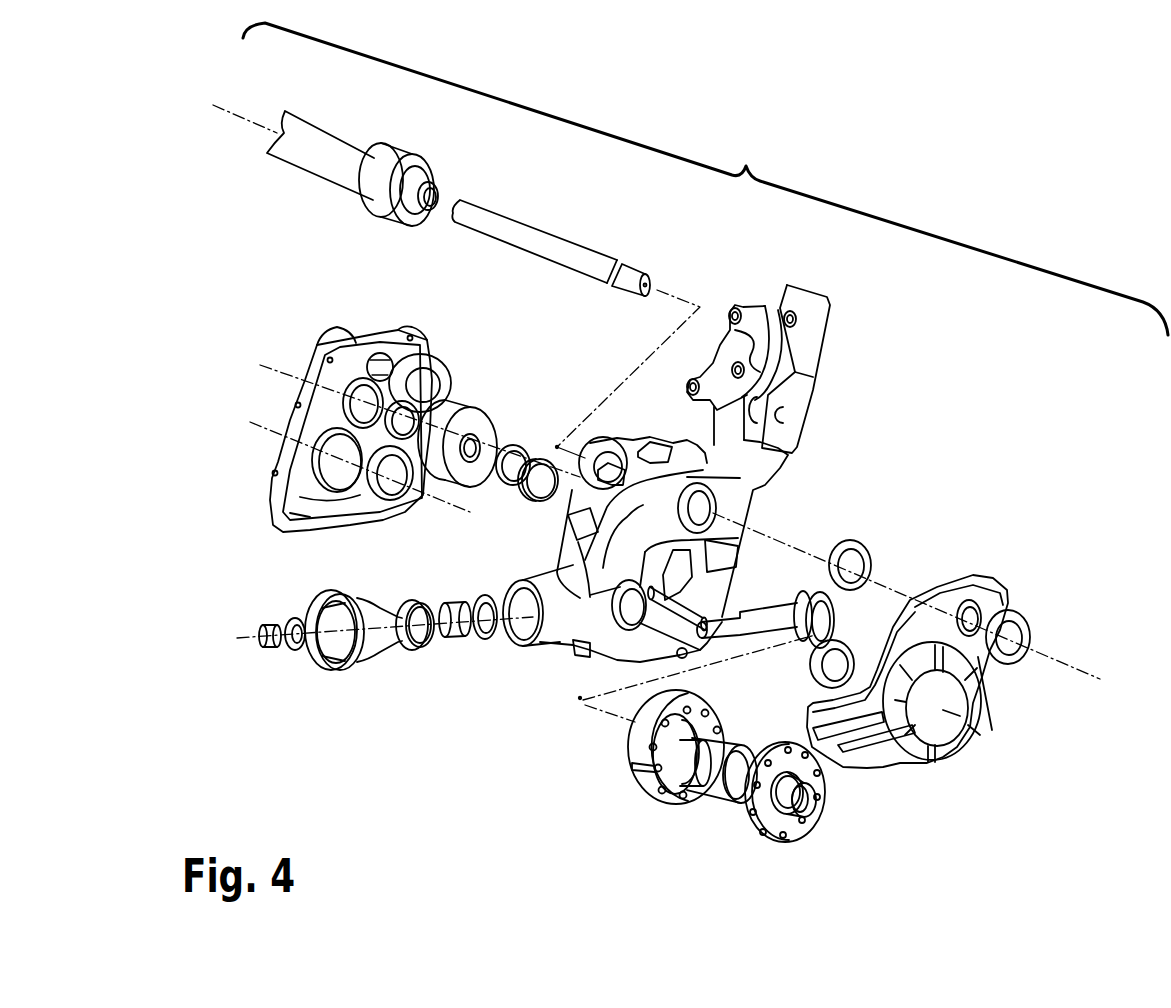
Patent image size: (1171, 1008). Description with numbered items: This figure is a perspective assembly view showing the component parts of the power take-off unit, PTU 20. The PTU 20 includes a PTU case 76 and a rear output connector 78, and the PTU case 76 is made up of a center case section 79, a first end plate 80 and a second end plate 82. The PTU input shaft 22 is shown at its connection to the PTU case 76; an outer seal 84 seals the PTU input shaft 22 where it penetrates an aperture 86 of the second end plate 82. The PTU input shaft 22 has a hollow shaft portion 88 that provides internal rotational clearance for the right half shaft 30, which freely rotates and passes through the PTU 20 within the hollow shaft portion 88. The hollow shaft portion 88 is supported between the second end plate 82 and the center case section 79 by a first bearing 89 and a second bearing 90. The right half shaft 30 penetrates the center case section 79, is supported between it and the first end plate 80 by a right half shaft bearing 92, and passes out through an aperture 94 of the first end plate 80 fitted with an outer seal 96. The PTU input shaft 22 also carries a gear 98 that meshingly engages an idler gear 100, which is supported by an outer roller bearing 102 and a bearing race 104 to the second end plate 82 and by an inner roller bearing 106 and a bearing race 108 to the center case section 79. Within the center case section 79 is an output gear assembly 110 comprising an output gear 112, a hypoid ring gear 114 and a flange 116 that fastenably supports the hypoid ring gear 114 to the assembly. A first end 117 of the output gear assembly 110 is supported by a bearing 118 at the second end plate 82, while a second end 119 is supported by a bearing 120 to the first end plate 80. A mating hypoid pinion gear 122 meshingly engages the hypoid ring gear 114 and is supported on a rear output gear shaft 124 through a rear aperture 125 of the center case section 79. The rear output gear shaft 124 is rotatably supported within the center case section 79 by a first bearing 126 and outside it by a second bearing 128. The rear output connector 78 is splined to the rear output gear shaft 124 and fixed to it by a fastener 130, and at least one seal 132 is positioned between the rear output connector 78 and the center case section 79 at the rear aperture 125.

The PTU 20 is at (705, 179).
The PTU input shaft 22 is at (322, 177).
The right half shaft 30 is at (525, 237).
The PTU case 76 is at (833, 300).
The rear output connector 78 is at (313, 599).
The center case section 79 is at (760, 510).
The first end plate 80 is at (980, 580).
The second end plate 82 is at (285, 455).
The outer seal 84 is at (340, 332).
The aperture 86 is at (380, 372).
The hollow shaft portion 88 is at (325, 127).
The first bearing 89 is at (437, 367).
The second bearing 90 is at (612, 445).
The right half shaft bearing 92 is at (860, 543).
The aperture 94 is at (1007, 595).
The outer seal 96 is at (1025, 618).
The gear 98 is at (398, 160).
The idler gear 100 is at (465, 412).
The outer roller bearing 102 is at (410, 477).
The bearing race 104 is at (347, 397).
The inner roller bearing 106 is at (502, 482).
The bearing race 108 is at (543, 460).
The output gear assembly 110 is at (817, 812).
The output gear 112 is at (710, 783).
The hypoid ring gear 114 is at (633, 747).
The flange 116 is at (750, 827).
The first end 117 is at (683, 750).
The bearing 118 is at (395, 498).
The second end 119 is at (790, 817).
The bearing 120 is at (812, 678).
The hypoid pinion gear 122 is at (833, 618).
The rear output gear shaft 124 is at (757, 623).
The rear aperture 125 is at (523, 633).
The first bearing 126 is at (622, 642).
The second bearing 128 is at (485, 645).
The fastener 130 is at (267, 648).
The seal 132 is at (418, 650).